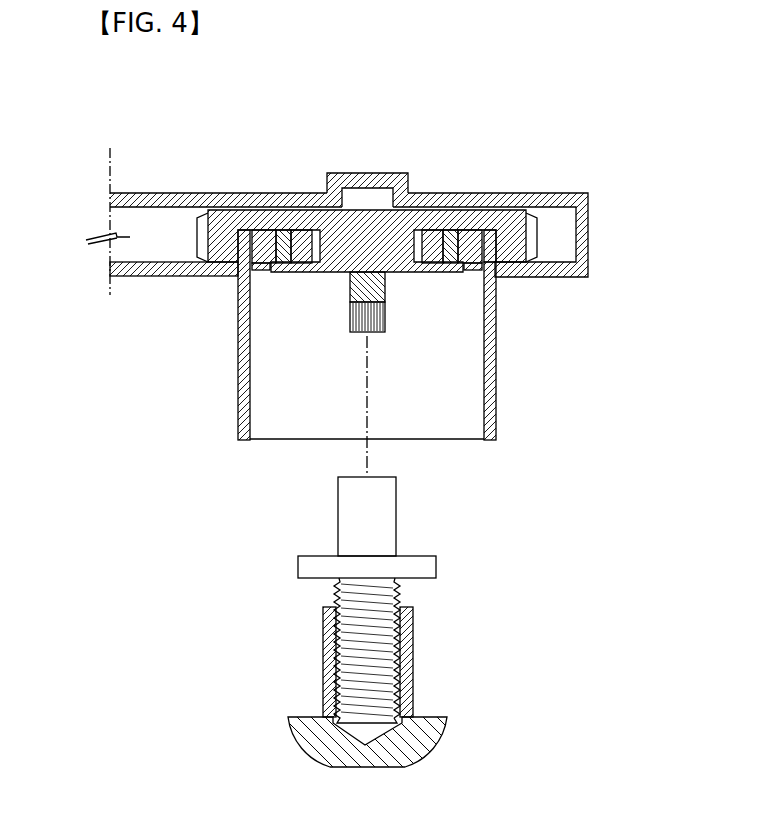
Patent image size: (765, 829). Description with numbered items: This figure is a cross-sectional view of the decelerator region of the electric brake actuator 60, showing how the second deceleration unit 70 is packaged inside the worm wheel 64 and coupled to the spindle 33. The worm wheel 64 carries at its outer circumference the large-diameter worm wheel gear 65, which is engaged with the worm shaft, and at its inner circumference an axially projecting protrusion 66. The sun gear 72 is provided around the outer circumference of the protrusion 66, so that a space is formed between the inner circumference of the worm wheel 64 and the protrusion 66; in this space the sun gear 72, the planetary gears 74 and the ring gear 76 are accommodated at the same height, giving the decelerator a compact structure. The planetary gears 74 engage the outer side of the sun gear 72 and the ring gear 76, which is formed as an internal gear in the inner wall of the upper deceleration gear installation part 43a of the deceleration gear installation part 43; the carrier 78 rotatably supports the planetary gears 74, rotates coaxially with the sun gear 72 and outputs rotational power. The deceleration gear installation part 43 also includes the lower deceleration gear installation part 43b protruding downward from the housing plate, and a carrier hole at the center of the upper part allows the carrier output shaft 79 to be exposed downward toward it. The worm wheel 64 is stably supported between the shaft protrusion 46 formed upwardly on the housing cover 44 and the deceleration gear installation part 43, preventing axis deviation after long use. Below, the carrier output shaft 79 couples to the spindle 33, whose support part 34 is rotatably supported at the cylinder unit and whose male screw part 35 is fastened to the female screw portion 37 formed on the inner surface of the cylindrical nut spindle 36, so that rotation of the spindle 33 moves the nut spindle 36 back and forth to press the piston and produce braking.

The display module 60 is at (169, 176).
The housing cover 44 is at (490, 193).
The shaft protrusion 46 is at (366, 172).
The deceleration gear installation part 43 is at (622, 288).
The upper deceleration gear installation part 43a is at (499, 248).
The lower deceleration gear installation part 43b is at (496, 348).
The worm wheel 64 is at (227, 222).
The worm wheel gear 65 is at (199, 232).
The protrusion 66 is at (333, 237).
The second deceleration unit 70 is at (204, 359).
The sun gear 72 is at (298, 263).
The planetary gears 74 is at (257, 268).
The ring gear 76 is at (247, 273).
The carrier 78 is at (335, 265).
The carrier output shaft 79 is at (358, 332).
The spindle 33 is at (498, 505).
The support part 34 is at (386, 523).
The male screw part 35 is at (388, 637).
The nut spindle 36 is at (418, 747).
The female screw portion 37 is at (402, 718).